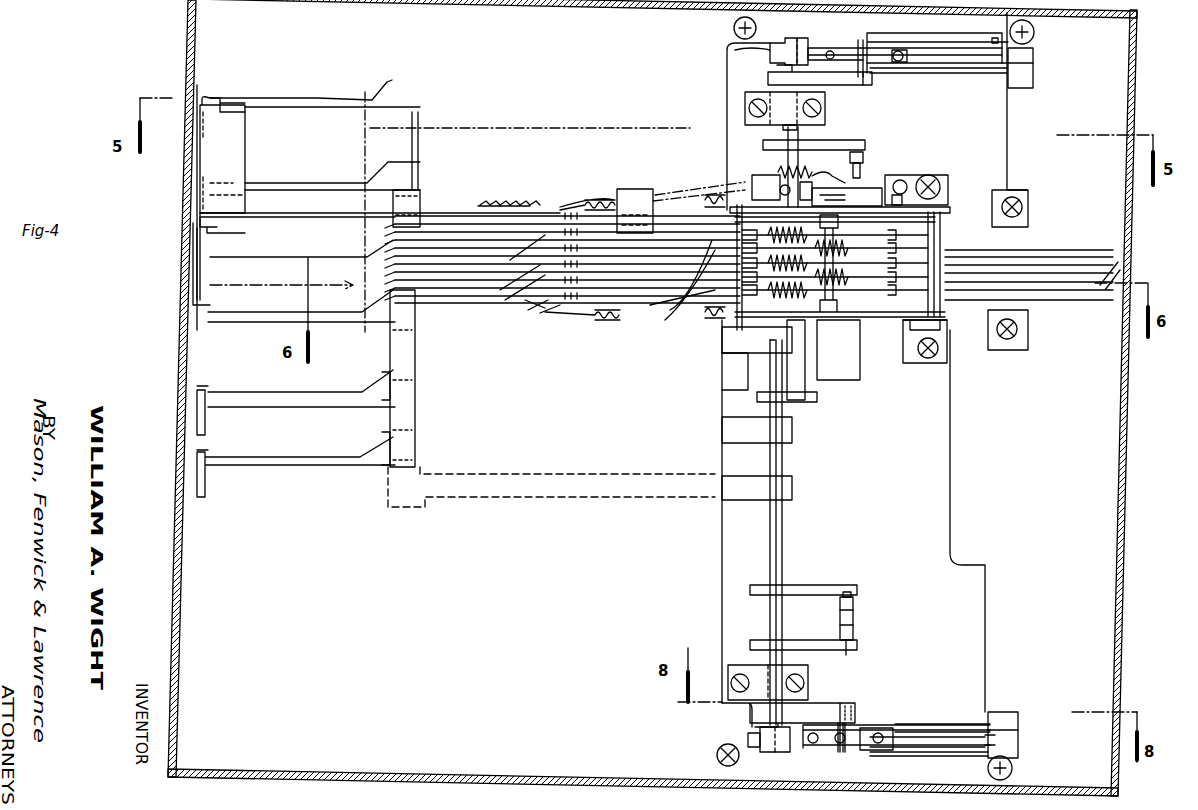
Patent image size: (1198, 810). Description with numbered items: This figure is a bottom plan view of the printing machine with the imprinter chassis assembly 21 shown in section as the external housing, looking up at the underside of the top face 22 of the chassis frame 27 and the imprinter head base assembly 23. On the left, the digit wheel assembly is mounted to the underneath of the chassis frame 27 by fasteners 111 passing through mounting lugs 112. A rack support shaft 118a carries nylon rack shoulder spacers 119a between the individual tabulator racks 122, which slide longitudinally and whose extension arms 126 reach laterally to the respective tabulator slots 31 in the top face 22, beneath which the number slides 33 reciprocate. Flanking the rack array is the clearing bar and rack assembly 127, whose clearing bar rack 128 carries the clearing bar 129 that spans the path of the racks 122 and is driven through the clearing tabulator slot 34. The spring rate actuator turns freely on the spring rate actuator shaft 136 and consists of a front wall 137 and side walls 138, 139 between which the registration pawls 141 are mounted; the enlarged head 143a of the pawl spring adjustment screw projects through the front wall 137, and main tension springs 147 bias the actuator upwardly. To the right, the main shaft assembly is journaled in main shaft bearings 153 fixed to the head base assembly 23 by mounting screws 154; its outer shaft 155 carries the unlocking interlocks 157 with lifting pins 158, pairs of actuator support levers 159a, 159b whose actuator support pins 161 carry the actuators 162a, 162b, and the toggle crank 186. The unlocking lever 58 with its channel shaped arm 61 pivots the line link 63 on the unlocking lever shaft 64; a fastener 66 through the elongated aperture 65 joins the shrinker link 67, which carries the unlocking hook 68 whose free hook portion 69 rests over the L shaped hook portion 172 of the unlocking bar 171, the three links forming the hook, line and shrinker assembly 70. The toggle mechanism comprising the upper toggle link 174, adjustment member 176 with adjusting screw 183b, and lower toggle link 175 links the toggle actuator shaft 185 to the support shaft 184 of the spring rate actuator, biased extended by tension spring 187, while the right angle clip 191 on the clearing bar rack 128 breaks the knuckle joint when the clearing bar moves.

The imprinter chassis assembly 21 is at (1137, 438).
The top face 22 is at (560, 417).
The imprinter head base assembly 23 is at (957, 499).
The chassis frame 27 is at (190, 38).
The tabulator slots 31 is at (318, 173).
The number slide 33 is at (722, 351).
The clearing tabulator slot 34 is at (312, 99).
The unlocking lever 58 is at (984, 79).
The channel shaped arm 61 is at (950, 64).
The line link 63 is at (935, 52).
The unlocking lever shaft 64 is at (1000, 98).
The elongated aperture 65 is at (900, 68).
The fastener 66 is at (905, 44).
The shrinker link 67 is at (880, 48).
The unlocking hook 68 is at (815, 47).
The free hook portion 69 is at (735, 50).
The hook, line and shrinker assembly 70 is at (883, 714).
The fasteners 111 is at (940, 173).
The mounting lugs 112 is at (945, 181).
The rack support shaft 118a is at (538, 313).
The rack shoulder spacers 119a is at (538, 238).
The tabulator racks 122 is at (1120, 258).
The extension arm 126 is at (420, 200).
The clearing bar and rack assembly 127 is at (259, 149).
The clearing bar rack 128 is at (345, 223).
The clearing bar 129 is at (224, 290).
The spring rate actuator shaft 136 is at (870, 330).
The front wall 137 is at (706, 300).
The side wall 138 is at (905, 364).
The side wall 139 is at (945, 211).
The registration pawls 141 is at (905, 285).
The enlarged head 143a is at (670, 312).
The main tension springs 147 is at (604, 196).
The main shaft bearings 153 is at (825, 98).
The mounting screws 154 is at (748, 100).
The outer shaft 155 is at (785, 530).
The unlocking interlocks 157 is at (868, 86).
The lifting pin 158 is at (857, 40).
The actuator support lever 159a is at (838, 140).
The actuator support lever 159b is at (820, 585).
The actuator support pin 161 is at (860, 152).
The actuator 162a is at (865, 160).
The actuator 162b is at (858, 605).
The unlocking bars 171 is at (750, 720).
The L shaped hook portion 172 is at (786, 38).
The upper toggle link 174 is at (755, 190).
The lower toggle link 175 is at (868, 188).
The adjustment member 176 is at (778, 172).
The adjusting screw 183b is at (935, 192).
The support shaft 184 is at (815, 333).
The toggle actuator shaft 185 is at (805, 373).
The toggle crank 186 is at (805, 402).
The tension spring 187 is at (697, 183).
The right angle clip 191 is at (640, 189).